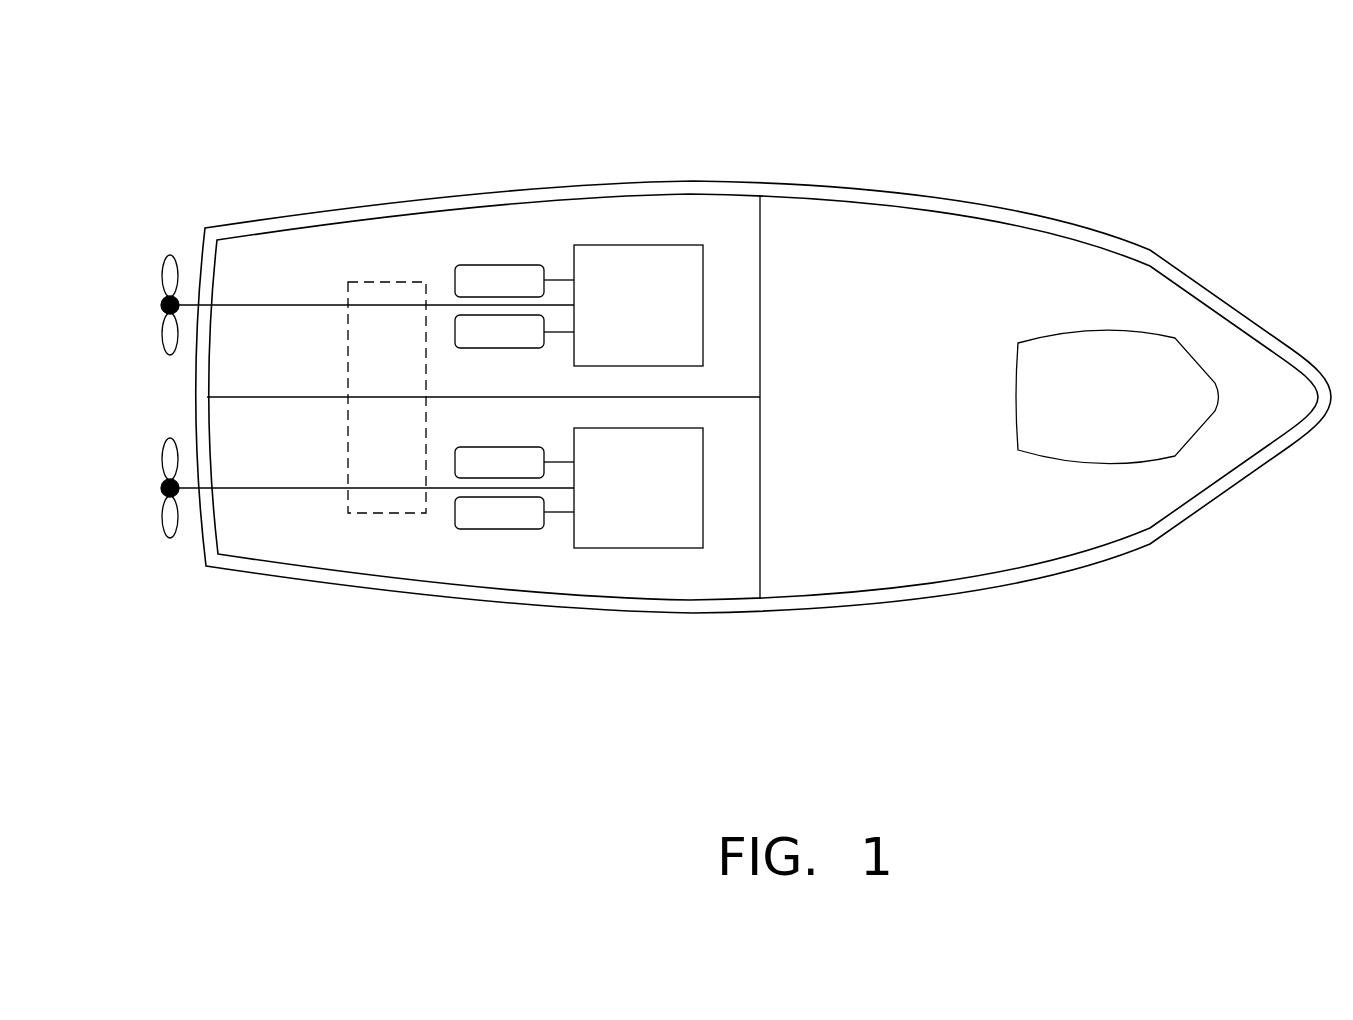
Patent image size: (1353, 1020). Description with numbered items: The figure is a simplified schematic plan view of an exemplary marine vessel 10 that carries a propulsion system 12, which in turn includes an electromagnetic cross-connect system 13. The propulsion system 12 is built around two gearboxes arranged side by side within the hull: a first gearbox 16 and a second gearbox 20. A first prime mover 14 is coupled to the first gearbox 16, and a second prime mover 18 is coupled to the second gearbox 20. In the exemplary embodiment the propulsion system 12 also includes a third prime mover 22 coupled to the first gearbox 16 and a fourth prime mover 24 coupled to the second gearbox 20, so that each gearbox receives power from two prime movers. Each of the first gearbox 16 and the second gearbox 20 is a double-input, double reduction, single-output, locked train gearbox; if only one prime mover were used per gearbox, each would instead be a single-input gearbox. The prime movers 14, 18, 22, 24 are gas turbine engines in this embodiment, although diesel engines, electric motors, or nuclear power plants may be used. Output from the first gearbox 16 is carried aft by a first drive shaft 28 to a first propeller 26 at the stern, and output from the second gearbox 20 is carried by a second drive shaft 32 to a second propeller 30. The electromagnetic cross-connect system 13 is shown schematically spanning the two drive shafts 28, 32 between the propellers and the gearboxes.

The marine vessel 10 is at (1125, 128).
The propulsion system 12 is at (740, 362).
The electromagnetic cross-connect system 13 is at (387, 282).
The first prime mover 14 is at (483, 295).
The first gearbox 16 is at (622, 320).
The second prime mover 18 is at (483, 477).
The second gearbox 20 is at (622, 511).
The third prime mover 22 is at (483, 346).
The fourth prime mover 24 is at (483, 527).
The first propeller 26 is at (170, 255).
The first drive shaft 28 is at (265, 305).
The second propeller 30 is at (170, 438).
The second drive shaft 32 is at (254, 488).